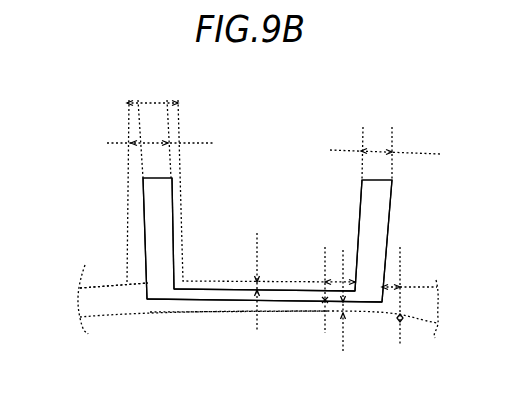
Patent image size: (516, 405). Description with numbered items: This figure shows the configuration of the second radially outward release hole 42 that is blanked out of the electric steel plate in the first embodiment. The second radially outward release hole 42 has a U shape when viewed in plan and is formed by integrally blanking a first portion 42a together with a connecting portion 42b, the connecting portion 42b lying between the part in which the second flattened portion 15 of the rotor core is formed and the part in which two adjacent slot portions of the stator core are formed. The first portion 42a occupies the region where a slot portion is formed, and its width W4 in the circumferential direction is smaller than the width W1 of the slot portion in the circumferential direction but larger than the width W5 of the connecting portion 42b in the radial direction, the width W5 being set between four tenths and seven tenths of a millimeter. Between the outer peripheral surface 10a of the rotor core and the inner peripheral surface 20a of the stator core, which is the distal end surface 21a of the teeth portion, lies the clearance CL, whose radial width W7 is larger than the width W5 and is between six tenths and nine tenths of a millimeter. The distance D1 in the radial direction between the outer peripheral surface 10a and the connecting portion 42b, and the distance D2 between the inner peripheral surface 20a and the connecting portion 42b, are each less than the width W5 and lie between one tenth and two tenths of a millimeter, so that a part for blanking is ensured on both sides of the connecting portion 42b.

The second radially outward release hole 42 is at (107, 117).
The first portion 42a is at (157, 250).
The connecting portion 42b is at (297, 299).
The inner peripheral surface 20a is at (103, 285).
The distal end surface 21a is at (114, 285).
The clearance CL is at (92, 297).
The outer peripheral surface 10a is at (112, 305).
The second flattened portion 15 is at (223, 313).
The width of the slot portion W1 is at (152, 89).
The width of the first portion W4 is at (275, 134).
The width of the connecting portion W5 is at (316, 290).
The width of the clearance W7 is at (416, 295).
The distance D1 is at (357, 304).
The distance D2 is at (236, 281).